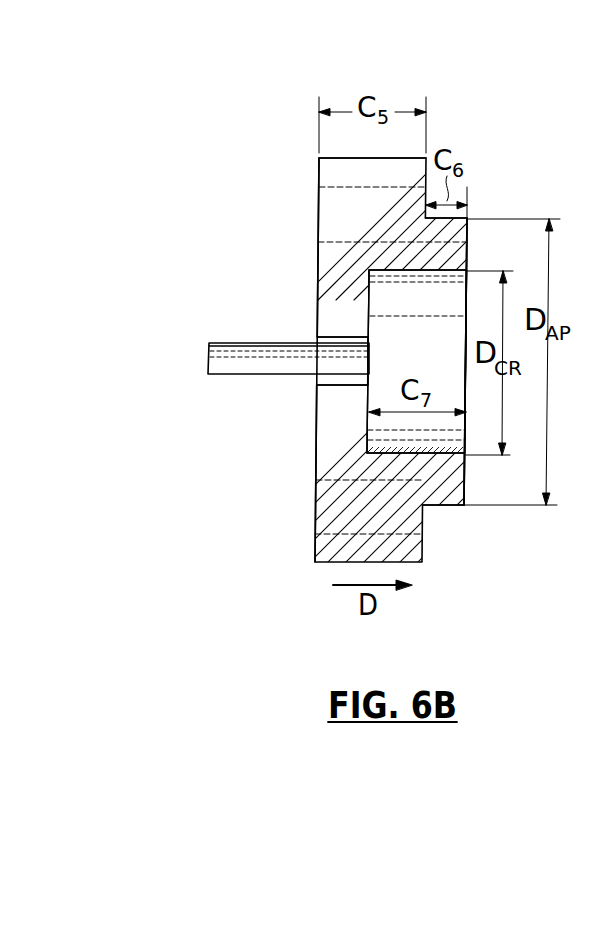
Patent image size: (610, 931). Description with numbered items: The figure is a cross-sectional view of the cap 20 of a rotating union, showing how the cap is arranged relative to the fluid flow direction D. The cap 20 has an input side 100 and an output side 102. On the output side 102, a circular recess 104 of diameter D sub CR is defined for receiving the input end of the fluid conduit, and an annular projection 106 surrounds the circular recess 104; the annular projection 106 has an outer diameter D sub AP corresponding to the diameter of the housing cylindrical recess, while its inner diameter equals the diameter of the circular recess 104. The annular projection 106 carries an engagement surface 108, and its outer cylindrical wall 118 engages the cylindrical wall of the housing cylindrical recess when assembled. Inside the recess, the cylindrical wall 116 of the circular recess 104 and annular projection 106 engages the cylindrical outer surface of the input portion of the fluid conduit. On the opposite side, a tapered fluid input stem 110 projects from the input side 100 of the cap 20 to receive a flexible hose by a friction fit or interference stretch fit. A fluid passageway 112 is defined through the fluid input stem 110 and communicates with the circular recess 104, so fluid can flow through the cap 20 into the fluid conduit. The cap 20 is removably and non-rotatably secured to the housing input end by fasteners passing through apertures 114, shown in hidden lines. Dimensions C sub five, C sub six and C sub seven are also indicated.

The cap 20 is at (276, 167).
The input side 100 is at (252, 459).
The output side 102 is at (439, 557).
The circular recess 104 is at (371, 291).
The annular projection 106 is at (468, 237).
The engagement surface 108 is at (467, 477).
The tapered fluid input stem 110 is at (262, 343).
The fluid passageway 112 is at (262, 378).
The apertures 114 is at (318, 206).
The cylindrical wall 116 is at (387, 303).
The outer cylindrical wall 118 is at (440, 507).